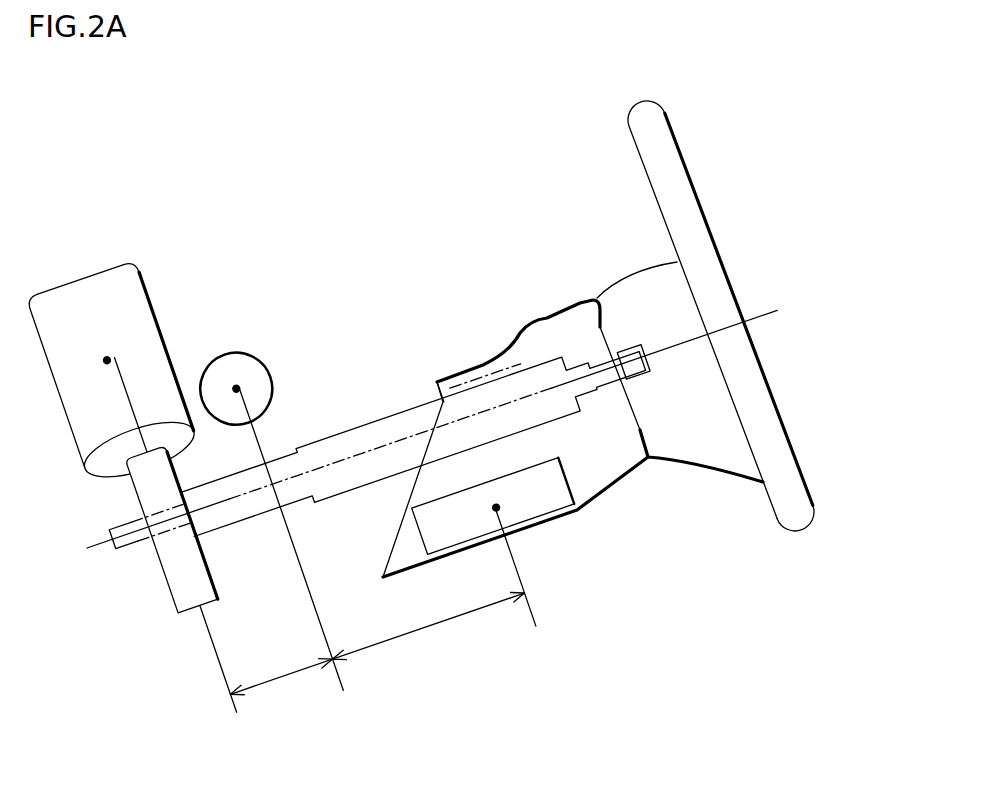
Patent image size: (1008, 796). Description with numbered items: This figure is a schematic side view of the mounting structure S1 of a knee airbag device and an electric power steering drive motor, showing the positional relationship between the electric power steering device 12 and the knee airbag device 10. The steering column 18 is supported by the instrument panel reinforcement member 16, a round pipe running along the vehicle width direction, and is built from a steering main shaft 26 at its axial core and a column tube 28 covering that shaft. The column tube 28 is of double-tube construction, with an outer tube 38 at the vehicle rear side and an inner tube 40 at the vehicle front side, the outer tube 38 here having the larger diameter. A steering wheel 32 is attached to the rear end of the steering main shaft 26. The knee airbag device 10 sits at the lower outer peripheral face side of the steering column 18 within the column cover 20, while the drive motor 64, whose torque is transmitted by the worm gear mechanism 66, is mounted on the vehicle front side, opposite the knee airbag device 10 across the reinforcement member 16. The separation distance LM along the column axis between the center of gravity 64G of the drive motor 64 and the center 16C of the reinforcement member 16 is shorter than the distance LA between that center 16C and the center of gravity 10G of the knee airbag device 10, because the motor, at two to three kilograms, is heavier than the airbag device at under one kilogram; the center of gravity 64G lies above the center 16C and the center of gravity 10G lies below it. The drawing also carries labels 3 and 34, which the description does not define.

The steering device 3 is at (295, 206).
The mounting structure S1 is at (442, 162).
The knee airbag device 10 is at (576, 470).
The center of gravity of the knee airbag device 10G is at (496, 507).
The electric power steering device 12 is at (140, 253).
The drive motor 64 is at (150, 290).
The center of gravity of the drive motor 64G is at (107, 360).
The worm gear mechanism 66 is at (167, 591).
The instrument panel reinforcement member 16 is at (228, 352).
The center of the instrument panel reinforcement member 16C is at (237, 389).
The steering column 18 is at (390, 404).
The column cover 20 is at (548, 313).
The steering main shaft 26 is at (646, 337).
The column tube 28 is at (316, 453).
The steering wheel 32 is at (677, 140).
The upper shaft joint 34 is at (626, 352).
The outer tube 38 is at (487, 367).
The inner tube 40 is at (220, 533).